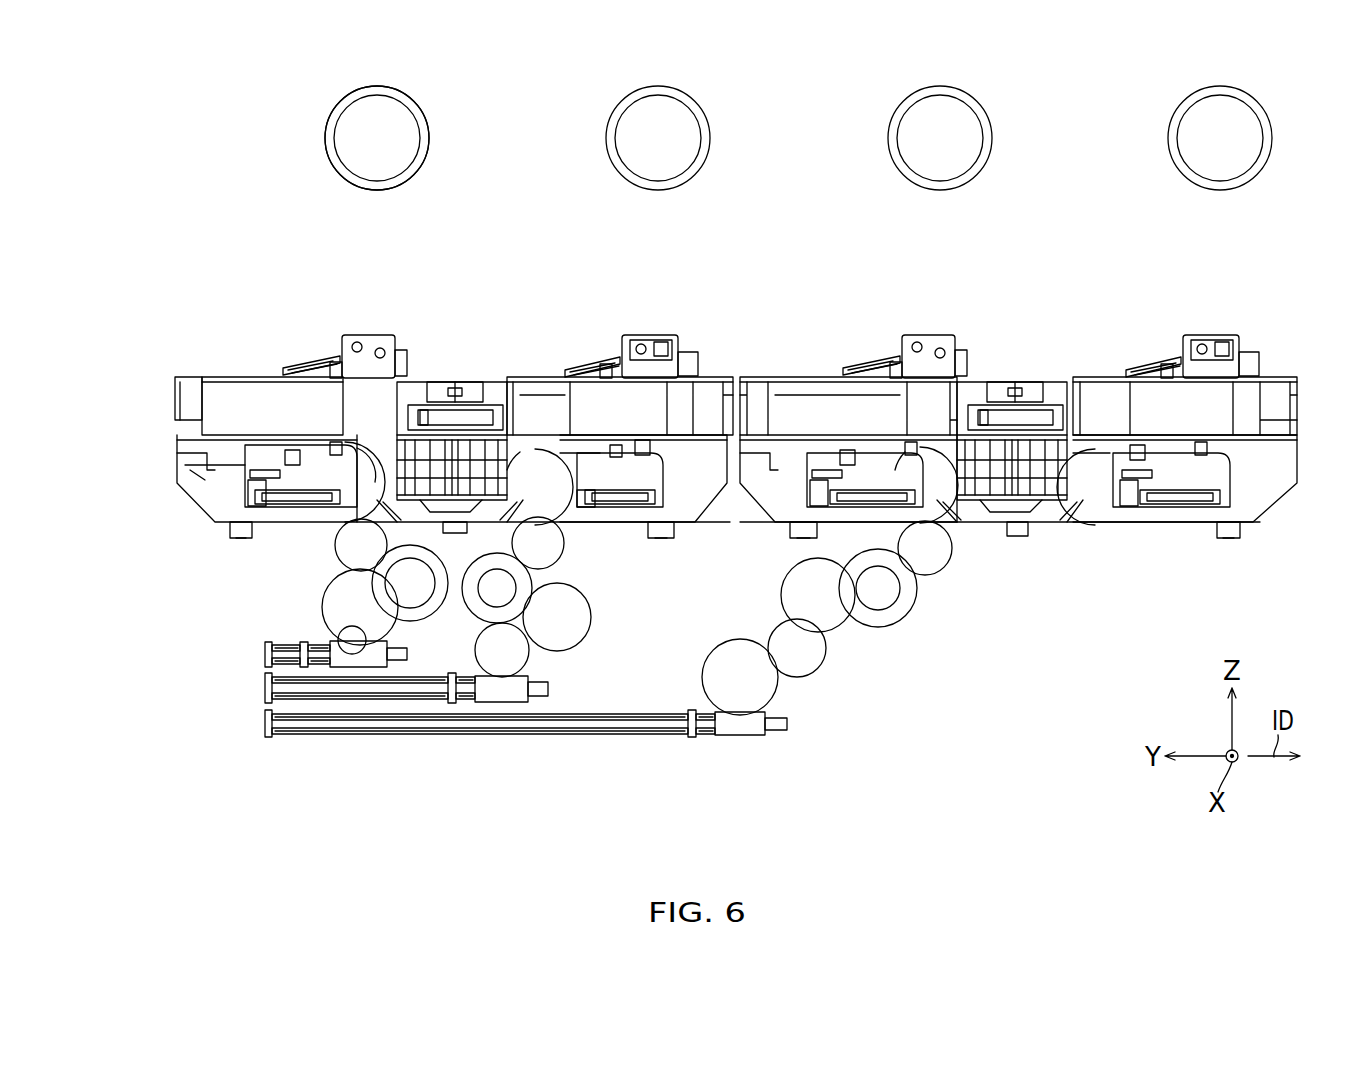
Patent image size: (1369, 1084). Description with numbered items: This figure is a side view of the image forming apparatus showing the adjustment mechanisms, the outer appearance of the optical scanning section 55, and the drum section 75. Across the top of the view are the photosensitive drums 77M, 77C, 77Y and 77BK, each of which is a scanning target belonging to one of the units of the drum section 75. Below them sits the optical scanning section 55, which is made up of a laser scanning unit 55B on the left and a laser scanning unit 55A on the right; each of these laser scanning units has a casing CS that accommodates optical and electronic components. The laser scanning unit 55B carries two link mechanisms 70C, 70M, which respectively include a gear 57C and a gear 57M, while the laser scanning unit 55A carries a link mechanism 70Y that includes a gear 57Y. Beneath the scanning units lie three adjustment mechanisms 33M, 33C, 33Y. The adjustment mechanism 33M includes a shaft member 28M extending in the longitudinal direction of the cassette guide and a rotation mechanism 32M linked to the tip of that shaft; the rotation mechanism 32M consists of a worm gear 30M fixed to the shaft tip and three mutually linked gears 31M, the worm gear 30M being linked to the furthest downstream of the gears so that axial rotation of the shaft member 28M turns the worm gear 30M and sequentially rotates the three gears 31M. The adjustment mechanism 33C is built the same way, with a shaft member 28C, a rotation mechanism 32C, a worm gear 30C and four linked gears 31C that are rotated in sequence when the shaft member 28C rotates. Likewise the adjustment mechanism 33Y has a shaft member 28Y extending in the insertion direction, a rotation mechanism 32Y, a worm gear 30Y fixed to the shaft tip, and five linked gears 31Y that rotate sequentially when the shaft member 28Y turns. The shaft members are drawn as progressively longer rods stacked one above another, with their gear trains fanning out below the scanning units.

The drum section 75 is at (300, 130).
The photosensitive drum 77M is at (428, 148).
The photosensitive drum 77C is at (607, 134).
The photosensitive drum 77Y is at (889, 134).
The photosensitive drum 77BK is at (1169, 134).
The casing CS is at (245, 398).
The optical scanning section 55 is at (737, 379).
The laser scanning unit 55A is at (797, 392).
The laser scanning unit 55B is at (598, 395).
The gear 57M is at (401, 397).
The link mechanism 70M is at (375, 482).
The gear 57C is at (520, 418).
The link mechanism 70C is at (534, 473).
The gear 57Y is at (958, 397).
The link mechanism 70Y is at (930, 478).
The shaft member 28M is at (277, 653).
The worm gear 30M is at (350, 652).
The gears 31M is at (348, 546).
The rotation mechanism 32M is at (299, 588).
The adjustment mechanism 33M is at (270, 603).
The shaft member 28C is at (568, 831).
The worm gear 30C is at (481, 707).
The gears 31C is at (507, 603).
The rotation mechanism 32C is at (538, 674).
The adjustment mechanism 33C is at (456, 696).
The shaft member 28Y is at (820, 746).
The worm gear 30Y is at (753, 722).
The gears 31Y is at (937, 549).
The rotation mechanism 32Y is at (895, 621).
The adjustment mechanism 33Y is at (707, 633).